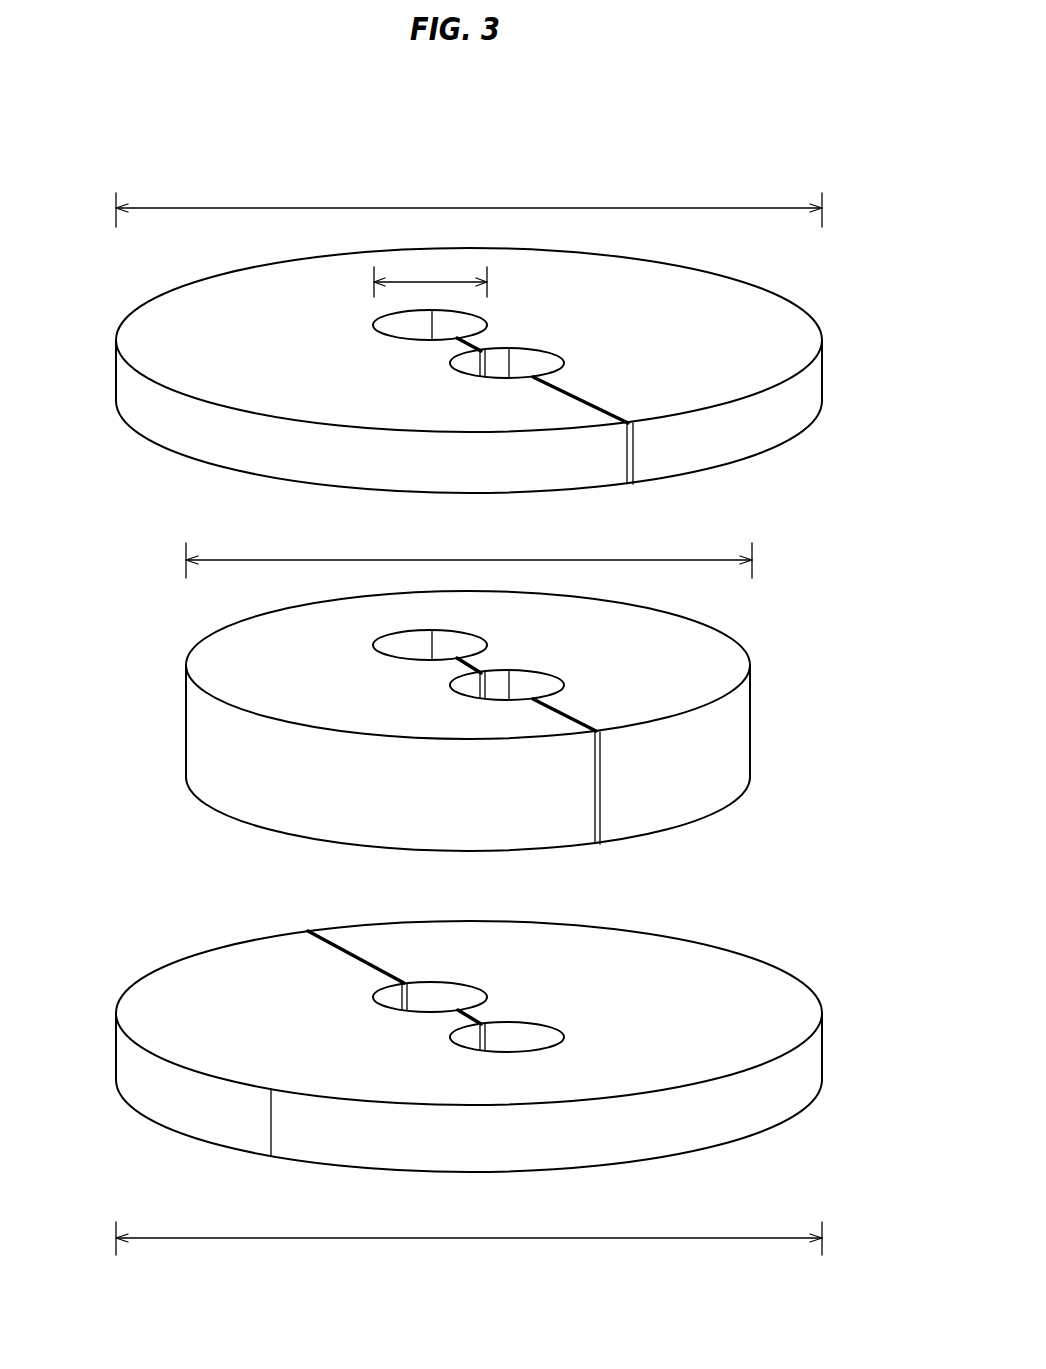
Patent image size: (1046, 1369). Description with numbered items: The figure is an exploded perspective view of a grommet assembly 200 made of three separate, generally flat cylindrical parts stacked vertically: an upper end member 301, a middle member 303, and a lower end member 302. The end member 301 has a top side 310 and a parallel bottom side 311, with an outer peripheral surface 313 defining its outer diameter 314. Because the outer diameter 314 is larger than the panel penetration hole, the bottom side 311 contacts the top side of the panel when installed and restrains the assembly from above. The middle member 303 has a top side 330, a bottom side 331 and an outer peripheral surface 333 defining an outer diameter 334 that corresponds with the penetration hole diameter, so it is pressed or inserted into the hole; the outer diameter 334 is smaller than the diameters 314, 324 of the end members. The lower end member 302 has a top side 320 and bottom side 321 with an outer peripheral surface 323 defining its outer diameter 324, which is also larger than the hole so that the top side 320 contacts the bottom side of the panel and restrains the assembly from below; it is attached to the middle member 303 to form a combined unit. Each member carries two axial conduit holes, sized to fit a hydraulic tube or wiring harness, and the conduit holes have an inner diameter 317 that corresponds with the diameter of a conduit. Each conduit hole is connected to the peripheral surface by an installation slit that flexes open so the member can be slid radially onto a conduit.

The grommet assembly 200 is at (752, 118).
The end member 301 is at (463, 384).
The end member 302 is at (467, 1054).
The middle member 303 is at (464, 730).
The top side 310 is at (158, 316).
The bottom side 311 is at (192, 482).
The outer peripheral surface 313 is at (126, 392).
The outer diameter 314 is at (541, 207).
The inner diameter 317 is at (410, 282).
The top side 320 is at (178, 978).
The bottom side 321 is at (188, 1155).
The outer peripheral surface 323 is at (133, 1085).
The outer diameter 324 is at (487, 1237).
The top side 330 is at (264, 624).
The bottom side 331 is at (266, 840).
The outer peripheral surface 333 is at (200, 731).
The outer diameter 334 is at (498, 560).